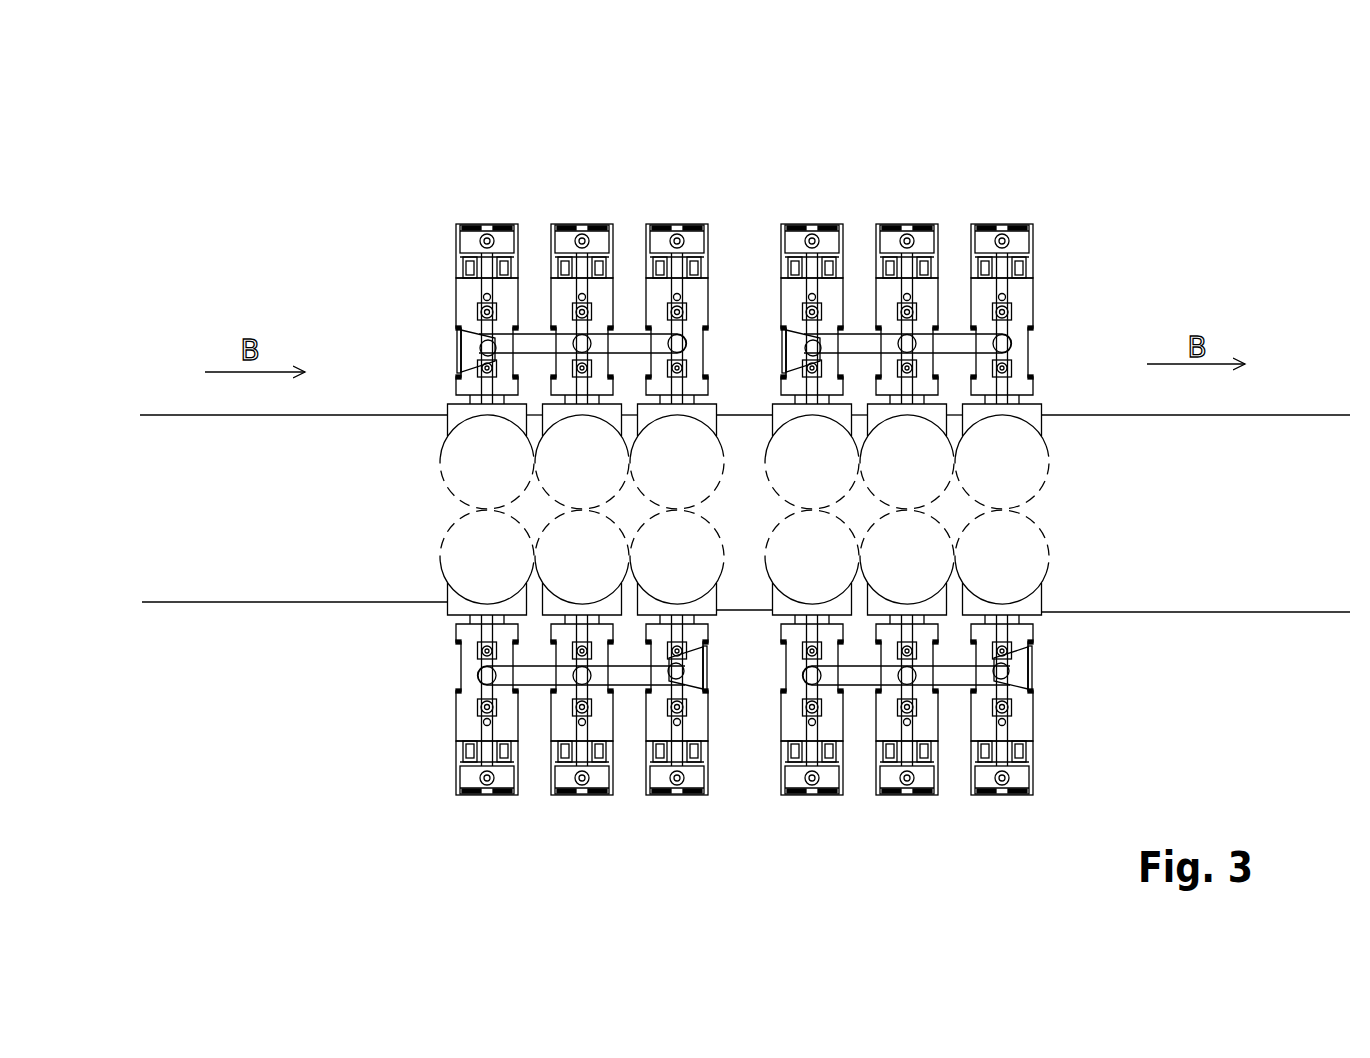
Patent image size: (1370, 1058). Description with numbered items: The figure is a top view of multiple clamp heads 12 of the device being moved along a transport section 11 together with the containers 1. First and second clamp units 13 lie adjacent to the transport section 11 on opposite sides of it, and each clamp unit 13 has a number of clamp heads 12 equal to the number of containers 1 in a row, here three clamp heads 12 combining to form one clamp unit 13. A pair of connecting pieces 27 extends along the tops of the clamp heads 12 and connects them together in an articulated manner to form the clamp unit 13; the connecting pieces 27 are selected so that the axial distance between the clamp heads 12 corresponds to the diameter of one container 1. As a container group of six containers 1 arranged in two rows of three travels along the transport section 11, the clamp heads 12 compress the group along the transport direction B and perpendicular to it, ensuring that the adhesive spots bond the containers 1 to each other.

The container 1 is at (478, 537).
The transport section 11 is at (207, 560).
The clamp head 12 is at (663, 243).
The clamp unit 13 is at (478, 197).
The connecting piece 27 is at (635, 345).